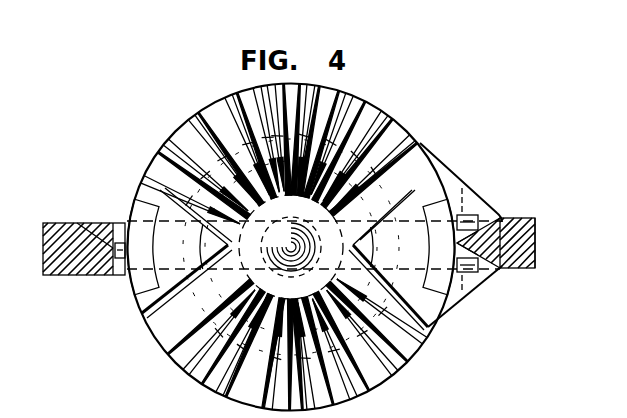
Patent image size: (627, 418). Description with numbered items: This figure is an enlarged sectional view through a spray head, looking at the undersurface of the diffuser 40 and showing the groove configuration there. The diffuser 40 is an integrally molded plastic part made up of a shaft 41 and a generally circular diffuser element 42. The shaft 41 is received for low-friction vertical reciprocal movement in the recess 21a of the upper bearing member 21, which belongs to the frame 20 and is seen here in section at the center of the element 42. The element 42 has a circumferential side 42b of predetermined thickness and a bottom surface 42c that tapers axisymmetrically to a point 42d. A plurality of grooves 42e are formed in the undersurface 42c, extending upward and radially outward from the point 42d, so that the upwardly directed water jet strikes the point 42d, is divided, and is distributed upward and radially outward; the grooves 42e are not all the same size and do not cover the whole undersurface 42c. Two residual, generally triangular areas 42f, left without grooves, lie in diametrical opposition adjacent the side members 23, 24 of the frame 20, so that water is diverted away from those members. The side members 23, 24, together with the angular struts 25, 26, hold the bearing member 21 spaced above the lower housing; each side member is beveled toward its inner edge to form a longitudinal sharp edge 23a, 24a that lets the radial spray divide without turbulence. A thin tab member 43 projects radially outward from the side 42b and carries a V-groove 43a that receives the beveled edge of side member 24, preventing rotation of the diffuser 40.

The frame 20 is at (540, 220).
The upper bearing member 21 is at (291, 247).
The recess 21a is at (291, 247).
The side member 23 is at (62, 235).
The sharp edge 23a is at (115, 262).
The side member 24 is at (524, 214).
The sharp edge 24a is at (458, 243).
The angular strut 25 is at (97, 225).
The angular strut 26 is at (491, 216).
The diffuser 40 is at (400, 117).
The shaft 41 is at (291, 255).
The diffuser element 42 is at (405, 152).
The circumferential side 42b is at (342, 113).
The bottom surface 42c is at (172, 338).
The point 42d is at (250, 402).
The grooves 42e is at (212, 112).
The triangular areas 42f is at (167, 280).
The tab member 43 is at (482, 290).
The V-groove 43a is at (536, 252).